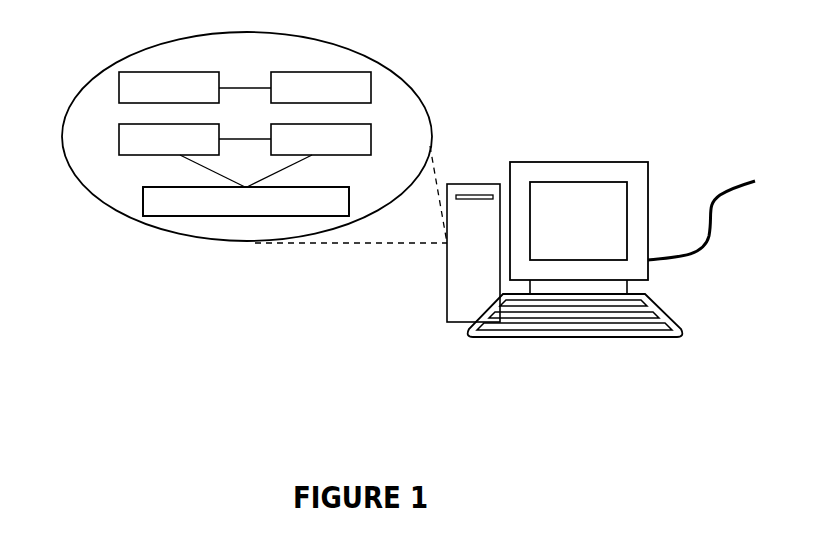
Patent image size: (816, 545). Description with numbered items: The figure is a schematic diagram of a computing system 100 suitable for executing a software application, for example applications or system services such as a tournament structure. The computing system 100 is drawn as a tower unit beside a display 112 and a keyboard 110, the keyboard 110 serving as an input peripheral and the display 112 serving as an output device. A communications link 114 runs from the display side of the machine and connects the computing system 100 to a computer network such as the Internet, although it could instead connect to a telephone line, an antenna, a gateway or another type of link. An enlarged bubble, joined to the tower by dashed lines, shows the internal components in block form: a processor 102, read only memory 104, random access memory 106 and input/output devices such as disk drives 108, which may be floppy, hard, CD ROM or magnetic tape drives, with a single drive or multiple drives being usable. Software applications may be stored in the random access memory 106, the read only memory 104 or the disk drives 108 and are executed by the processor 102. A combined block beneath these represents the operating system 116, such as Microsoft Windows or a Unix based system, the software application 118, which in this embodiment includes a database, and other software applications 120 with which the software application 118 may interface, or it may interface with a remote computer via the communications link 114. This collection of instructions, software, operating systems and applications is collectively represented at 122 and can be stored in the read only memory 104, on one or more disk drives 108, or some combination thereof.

The computing system 100 is at (425, 295).
The processor 102 is at (195, 87).
The read only memory (ROM) 104 is at (195, 155).
The random access memory (RAM) 106 is at (321, 87).
The disk drives 108 is at (309, 155).
The keyboard 110 is at (556, 345).
The display 112 is at (582, 154).
The communications link 114 is at (704, 206).
The operating system 116 is at (246, 201).
The software application 118 is at (246, 201).
The other software applications 120 is at (246, 201).
The collection of computer instructions, software, operating system(s) and/or applic 122 is at (142, 201).